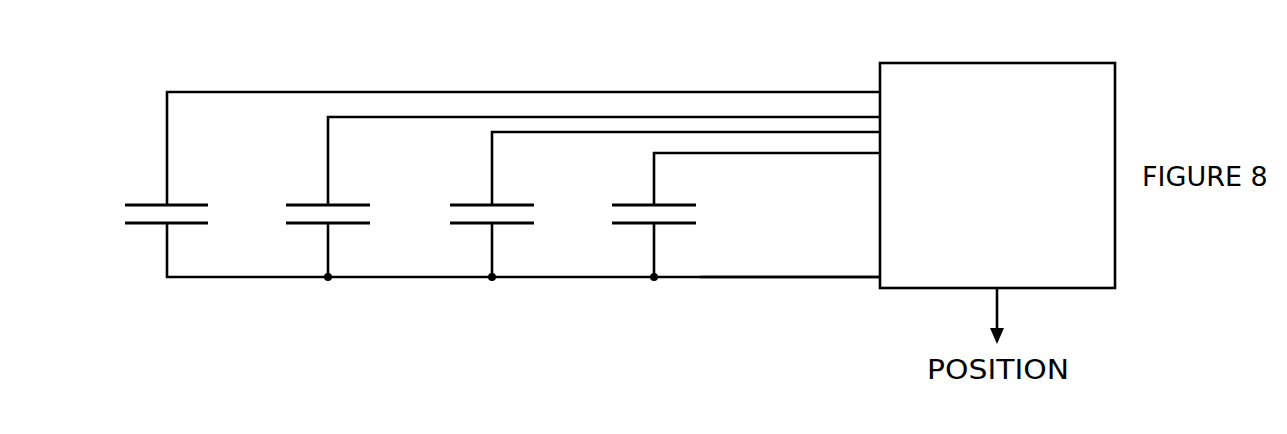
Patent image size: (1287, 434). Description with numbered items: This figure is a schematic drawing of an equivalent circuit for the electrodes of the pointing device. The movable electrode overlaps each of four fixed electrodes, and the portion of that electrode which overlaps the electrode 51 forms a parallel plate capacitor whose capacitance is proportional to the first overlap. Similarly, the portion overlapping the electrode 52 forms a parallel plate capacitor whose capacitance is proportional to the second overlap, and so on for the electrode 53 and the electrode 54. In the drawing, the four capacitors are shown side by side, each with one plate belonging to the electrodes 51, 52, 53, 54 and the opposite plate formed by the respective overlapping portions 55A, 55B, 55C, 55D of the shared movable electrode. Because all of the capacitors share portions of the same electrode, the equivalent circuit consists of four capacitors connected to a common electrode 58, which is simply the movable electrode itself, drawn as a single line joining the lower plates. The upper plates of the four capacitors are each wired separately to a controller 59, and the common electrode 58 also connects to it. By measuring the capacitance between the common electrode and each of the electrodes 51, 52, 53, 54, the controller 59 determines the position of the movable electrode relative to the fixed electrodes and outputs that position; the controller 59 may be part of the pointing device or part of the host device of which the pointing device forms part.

The electrode 51 is at (136, 203).
The electrode 52 is at (297, 203).
The electrode 53 is at (461, 203).
The electrode 54 is at (623, 203).
The portion of electrode 55 55A is at (136, 226).
The portion of electrode 55 55B is at (297, 226).
The portion of electrode 55 55C is at (461, 226).
The portion of electrode 55 55D is at (623, 226).
The common electrode 58 is at (753, 278).
The controller 59 is at (1017, 223).